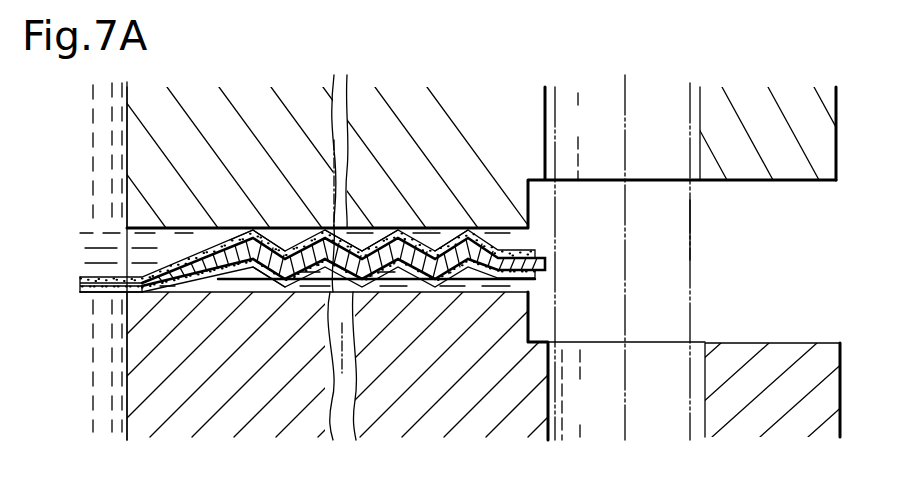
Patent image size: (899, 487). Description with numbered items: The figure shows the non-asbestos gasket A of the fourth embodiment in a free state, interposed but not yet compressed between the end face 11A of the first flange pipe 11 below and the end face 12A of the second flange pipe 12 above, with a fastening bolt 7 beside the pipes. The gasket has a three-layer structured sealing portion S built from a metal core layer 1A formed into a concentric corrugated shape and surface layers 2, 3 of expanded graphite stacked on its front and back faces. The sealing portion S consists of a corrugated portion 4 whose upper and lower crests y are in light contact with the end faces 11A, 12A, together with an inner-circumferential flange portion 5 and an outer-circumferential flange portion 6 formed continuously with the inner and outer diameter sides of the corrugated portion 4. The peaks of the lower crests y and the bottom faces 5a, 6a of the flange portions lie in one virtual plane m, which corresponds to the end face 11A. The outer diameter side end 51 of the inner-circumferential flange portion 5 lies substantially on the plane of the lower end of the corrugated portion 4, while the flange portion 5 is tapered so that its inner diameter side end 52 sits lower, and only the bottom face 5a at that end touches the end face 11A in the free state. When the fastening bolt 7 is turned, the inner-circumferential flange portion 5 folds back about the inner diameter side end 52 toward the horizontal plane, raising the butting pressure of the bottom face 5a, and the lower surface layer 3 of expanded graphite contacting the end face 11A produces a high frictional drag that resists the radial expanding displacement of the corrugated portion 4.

The non-asbestos gasket A is at (237, 228).
The end face of second flange pipe 12A is at (186, 257).
The second flange pipe 12 is at (800, 182).
The first flange pipe 11 is at (798, 343).
The end face of first flange pipe 11A is at (481, 292).
The fastening bolt 7 is at (690, 232).
The outer-circumferential flange portion 6 is at (518, 247).
The bottom face of outer-circumferential flange portion 6a is at (528, 305).
The core layer 1A is at (548, 266).
The surface layer 2 is at (450, 228).
The surface layer 3 is at (253, 291).
The corrugated portion 4 is at (383, 228).
The inner-circumferential flange portion 5 is at (127, 198).
The bottom face of inner-circumferential flange portion 5a is at (171, 292).
The outer diameter side end 51 is at (207, 290).
The inner diameter side end 52 is at (165, 293).
The virtual plane m is at (405, 292).
The crest y is at (323, 228).
The sealing portion S is at (333, 197).